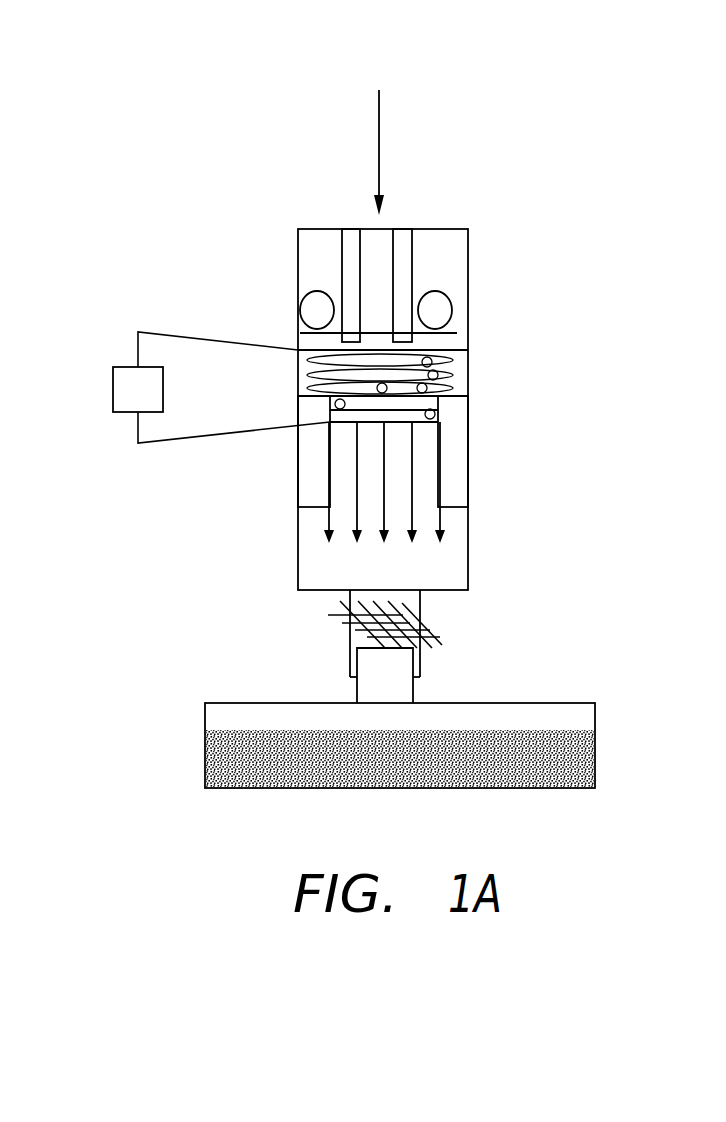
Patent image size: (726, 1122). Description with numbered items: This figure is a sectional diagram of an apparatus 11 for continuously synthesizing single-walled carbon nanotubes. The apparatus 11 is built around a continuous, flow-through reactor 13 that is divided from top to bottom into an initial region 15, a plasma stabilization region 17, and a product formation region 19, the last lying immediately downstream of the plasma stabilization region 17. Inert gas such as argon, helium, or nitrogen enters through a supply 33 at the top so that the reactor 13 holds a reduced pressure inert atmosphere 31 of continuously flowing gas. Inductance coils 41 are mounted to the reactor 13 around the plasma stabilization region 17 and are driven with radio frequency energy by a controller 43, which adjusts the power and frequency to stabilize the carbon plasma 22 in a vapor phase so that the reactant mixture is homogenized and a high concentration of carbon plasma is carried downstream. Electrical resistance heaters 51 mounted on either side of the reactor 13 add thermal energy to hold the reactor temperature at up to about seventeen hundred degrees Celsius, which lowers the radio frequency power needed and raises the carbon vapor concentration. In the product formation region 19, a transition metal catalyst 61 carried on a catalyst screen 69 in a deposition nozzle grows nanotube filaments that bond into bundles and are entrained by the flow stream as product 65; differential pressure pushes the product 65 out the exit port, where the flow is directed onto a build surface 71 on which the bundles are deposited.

The apparatus 11 is at (547, 131).
The supply 33 is at (379, 160).
The reactor 13 is at (298, 553).
The initial region 15 is at (548, 222).
The reduced pressure inert atmosphere 31 is at (450, 345).
The inductance coils 41 is at (300, 373).
The controller 43 is at (153, 403).
The plasma stabilization region 17 is at (550, 340).
The electrical resistance heaters 51 is at (468, 493).
The carbon plasma 22 is at (352, 539).
The transition metal catalyst 61 is at (402, 590).
The product formation region 19 is at (607, 555).
The catalyst screen 69 is at (440, 637).
The product 65 is at (417, 690).
The build surface 71 is at (205, 770).